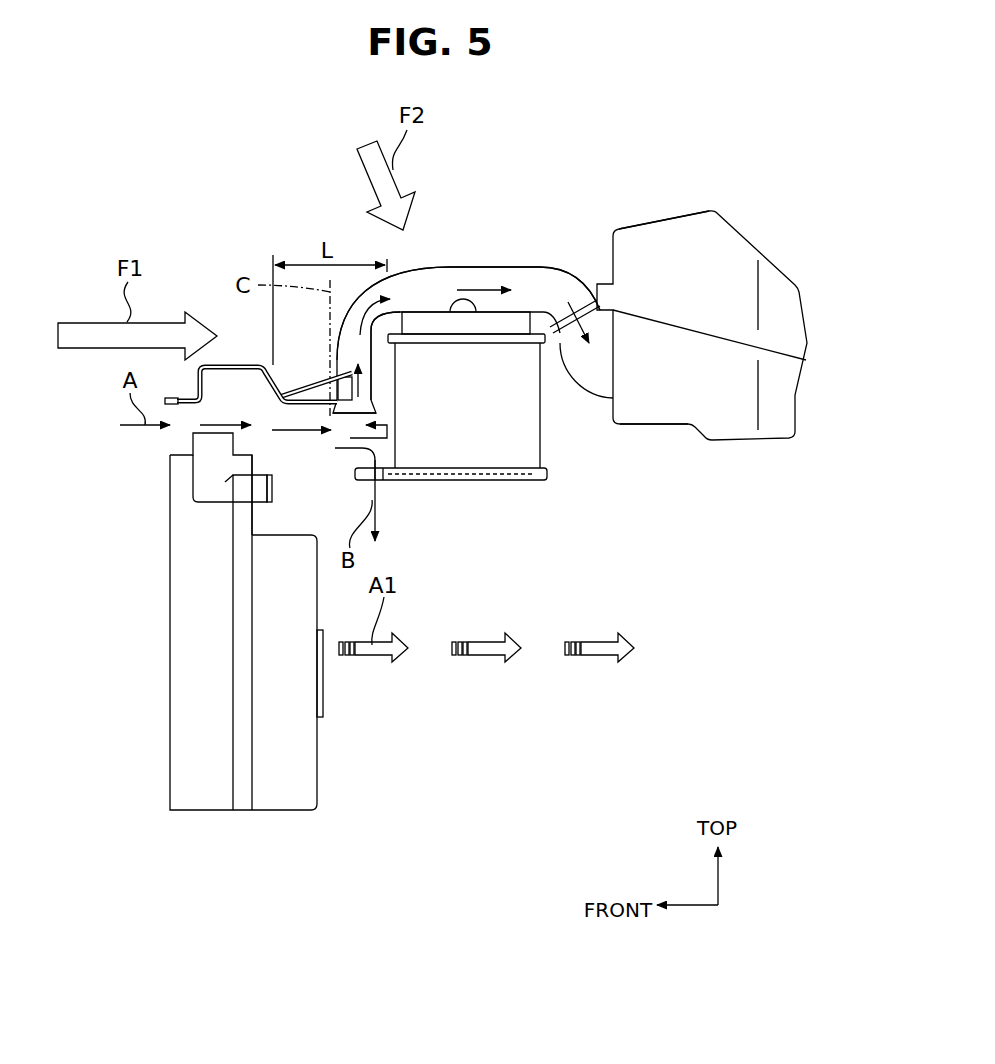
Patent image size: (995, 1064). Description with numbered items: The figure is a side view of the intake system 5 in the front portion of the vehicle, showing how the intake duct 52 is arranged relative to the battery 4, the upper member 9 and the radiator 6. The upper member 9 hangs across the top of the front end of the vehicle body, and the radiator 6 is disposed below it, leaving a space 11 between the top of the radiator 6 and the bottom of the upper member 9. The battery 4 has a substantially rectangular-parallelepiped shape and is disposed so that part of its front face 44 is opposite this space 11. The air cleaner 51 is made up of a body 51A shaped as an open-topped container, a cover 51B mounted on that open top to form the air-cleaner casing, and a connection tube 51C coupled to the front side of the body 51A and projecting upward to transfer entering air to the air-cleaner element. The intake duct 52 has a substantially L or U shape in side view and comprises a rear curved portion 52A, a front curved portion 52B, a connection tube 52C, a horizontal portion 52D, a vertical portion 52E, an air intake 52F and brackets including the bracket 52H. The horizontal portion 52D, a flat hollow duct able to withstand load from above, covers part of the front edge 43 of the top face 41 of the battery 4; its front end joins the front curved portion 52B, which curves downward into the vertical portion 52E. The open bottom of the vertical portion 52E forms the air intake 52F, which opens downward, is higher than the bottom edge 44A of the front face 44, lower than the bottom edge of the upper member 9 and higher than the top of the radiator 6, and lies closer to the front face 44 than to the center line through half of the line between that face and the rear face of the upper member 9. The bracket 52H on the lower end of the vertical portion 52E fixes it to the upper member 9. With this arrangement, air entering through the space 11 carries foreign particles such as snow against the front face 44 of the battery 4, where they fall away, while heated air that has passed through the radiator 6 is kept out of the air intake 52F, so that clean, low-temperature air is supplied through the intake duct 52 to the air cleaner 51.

The battery 4 is at (495, 423).
The intake system 5 is at (618, 145).
The radiator 6 is at (203, 660).
The upper member 9 is at (235, 365).
The space 11 is at (217, 413).
The top face 41 is at (466, 303).
The front edge 43 is at (398, 313).
The front face 44 is at (383, 413).
The bottom edge 44A is at (445, 475).
The air cleaner 51 is at (757, 240).
The body 51A is at (668, 400).
The cover 51B is at (677, 253).
The connection tube 51C is at (586, 375).
The intake duct 52 is at (517, 263).
The rear curved portion 52A is at (544, 285).
The front curved portion 52B is at (388, 358).
The connection tube 52C is at (584, 303).
The horizontal portion 52D is at (483, 280).
The vertical portion 52E is at (364, 387).
The air intake 52F is at (352, 420).
The bracket 52H is at (320, 372).